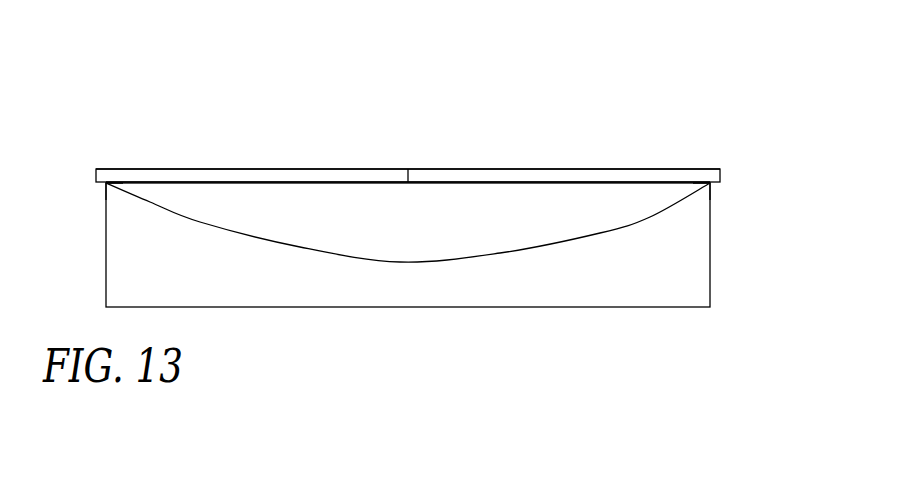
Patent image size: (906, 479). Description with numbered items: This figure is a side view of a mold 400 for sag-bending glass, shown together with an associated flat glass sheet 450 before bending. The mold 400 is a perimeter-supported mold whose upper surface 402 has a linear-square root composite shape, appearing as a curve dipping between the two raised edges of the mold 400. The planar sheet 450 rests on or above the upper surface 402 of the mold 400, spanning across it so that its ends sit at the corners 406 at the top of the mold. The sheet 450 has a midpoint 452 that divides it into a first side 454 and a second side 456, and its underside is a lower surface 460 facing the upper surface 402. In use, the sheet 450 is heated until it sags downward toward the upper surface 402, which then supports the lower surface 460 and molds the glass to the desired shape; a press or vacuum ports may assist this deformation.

The mold 400 is at (409, 276).
The upper surface 402 is at (500, 253).
The corner edge 406 is at (106, 184).
The sheet 450 is at (408, 123).
The midpoint 452 is at (408, 168).
The first side 454 is at (235, 168).
The second side 456 is at (570, 168).
The lower surface 460 is at (332, 183).